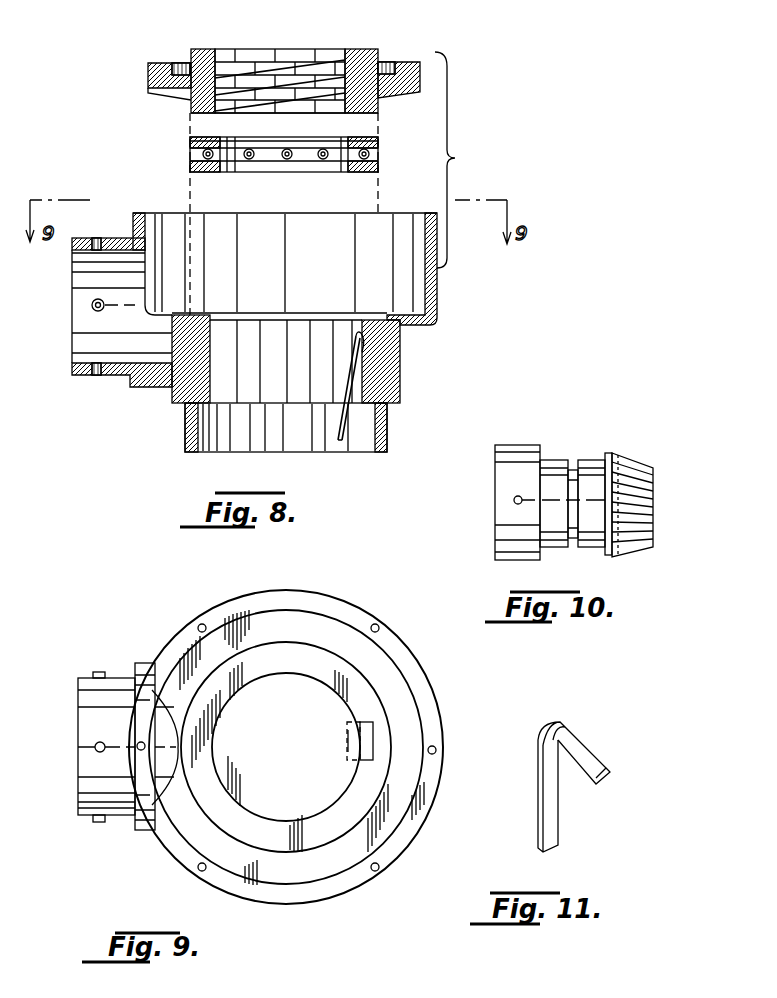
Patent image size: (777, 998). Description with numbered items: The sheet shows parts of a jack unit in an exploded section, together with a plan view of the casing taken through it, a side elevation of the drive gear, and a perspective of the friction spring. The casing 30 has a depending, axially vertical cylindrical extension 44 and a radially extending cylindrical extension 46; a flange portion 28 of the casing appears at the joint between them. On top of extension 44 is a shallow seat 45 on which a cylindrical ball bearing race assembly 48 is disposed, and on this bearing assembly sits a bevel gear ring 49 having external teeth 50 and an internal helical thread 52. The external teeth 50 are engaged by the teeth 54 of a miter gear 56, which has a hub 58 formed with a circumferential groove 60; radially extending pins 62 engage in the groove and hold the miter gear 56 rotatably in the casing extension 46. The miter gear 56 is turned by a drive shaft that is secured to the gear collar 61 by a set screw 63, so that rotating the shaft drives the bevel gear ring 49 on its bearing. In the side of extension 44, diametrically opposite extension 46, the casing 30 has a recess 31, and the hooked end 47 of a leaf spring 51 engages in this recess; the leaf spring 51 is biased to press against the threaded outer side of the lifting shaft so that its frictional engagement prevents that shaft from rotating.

In FIG. 8, the housing flange 28 is at (135, 232).
In FIG. 8, the casing 30 is at (405, 277).
In FIG. 9, the casing 30 is at (400, 657).
In FIG. 8, the recess 31 is at (380, 362).
In FIG. 9, the recess 31 is at (368, 742).
In FIG. 8, the cylindrical extension 44 is at (222, 430).
In FIG. 9, the cylindrical extension 44 is at (232, 705).
In FIG. 8, the shallow seat 45 is at (208, 318).
In FIG. 9, the shallow seat 45 is at (232, 815).
In FIG. 8, the cylindrical extension 46 is at (132, 380).
In FIG. 9, the cylindrical extension 46 is at (128, 812).
In FIG. 8, the hooked end 47 is at (364, 345).
In FIG. 11, the hooked end 47 is at (583, 750).
In FIG. 8, the ball bearing race assembly 48 is at (306, 170).
In FIG. 8, the bevel gear ring 49 is at (205, 50).
In FIG. 8, the external teeth 50 is at (172, 96).
In FIG. 8, the leaf spring 51 is at (345, 426).
In FIG. 9, the leaf spring 51 is at (346, 736).
In FIG. 11, the leaf spring 51 is at (553, 800).
In FIG. 8, the internal helical thread 52 is at (302, 68).
In FIG. 10, the teeth 54 is at (622, 466).
In FIG. 10, the miter gear 56 is at (638, 468).
In FIG. 10, the hub 58 is at (545, 462).
In FIG. 10, the circumferential groove 60 is at (572, 470).
In FIG. 10, the gear collar 61 is at (515, 465).
In FIG. 9, the pins 62 is at (98, 672).
In FIG. 10, the set screw 63 is at (514, 500).